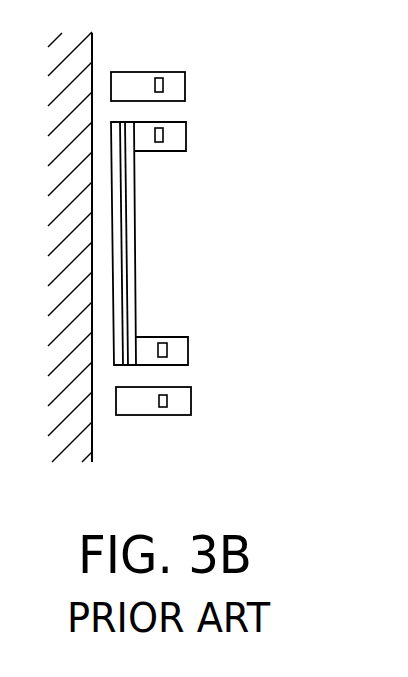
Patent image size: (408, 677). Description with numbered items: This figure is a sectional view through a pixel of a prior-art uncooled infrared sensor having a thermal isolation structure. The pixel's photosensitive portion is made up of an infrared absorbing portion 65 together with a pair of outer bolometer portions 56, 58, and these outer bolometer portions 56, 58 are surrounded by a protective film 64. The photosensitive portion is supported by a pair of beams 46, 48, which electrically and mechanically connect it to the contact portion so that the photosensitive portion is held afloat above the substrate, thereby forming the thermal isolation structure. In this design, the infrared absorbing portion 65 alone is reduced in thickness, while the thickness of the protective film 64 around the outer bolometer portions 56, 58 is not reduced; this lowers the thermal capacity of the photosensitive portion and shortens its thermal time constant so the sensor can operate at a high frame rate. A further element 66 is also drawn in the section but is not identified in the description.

The beam 46 is at (162, 417).
The beam 48 is at (161, 78).
The outer bolometer portion 56 is at (167, 335).
The outer bolometer portion 58 is at (163, 139).
The protective film 64 is at (178, 82).
The infrared absorbing portion 65 is at (127, 212).
The reflecting plate 66 is at (119, 263).